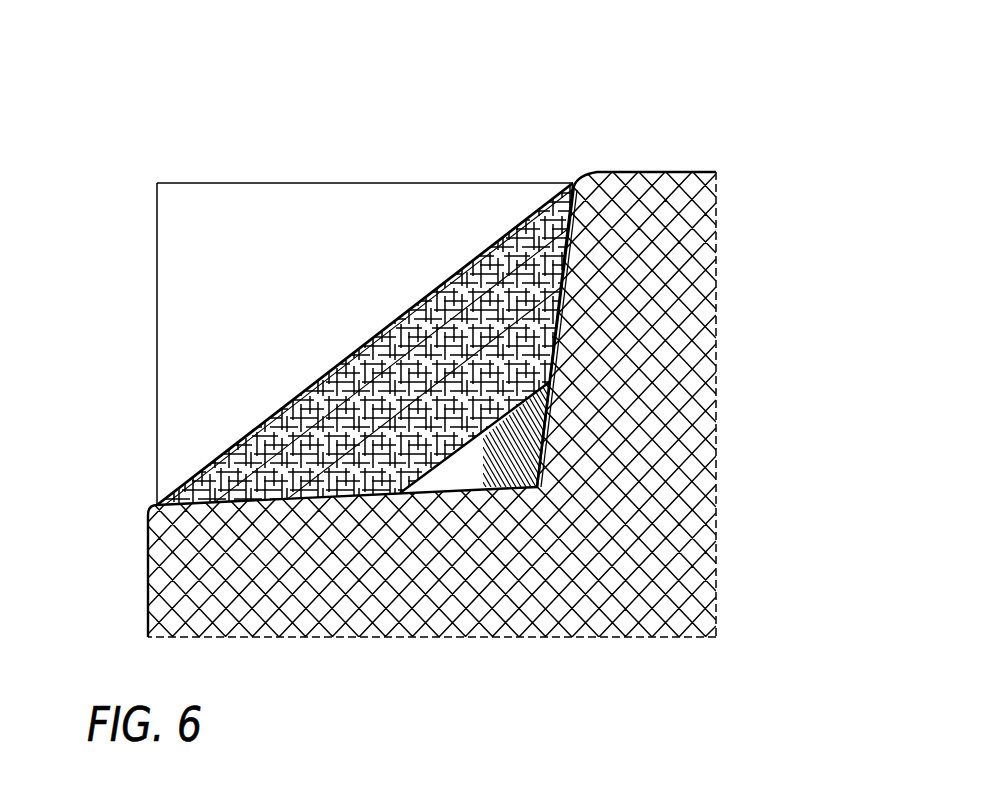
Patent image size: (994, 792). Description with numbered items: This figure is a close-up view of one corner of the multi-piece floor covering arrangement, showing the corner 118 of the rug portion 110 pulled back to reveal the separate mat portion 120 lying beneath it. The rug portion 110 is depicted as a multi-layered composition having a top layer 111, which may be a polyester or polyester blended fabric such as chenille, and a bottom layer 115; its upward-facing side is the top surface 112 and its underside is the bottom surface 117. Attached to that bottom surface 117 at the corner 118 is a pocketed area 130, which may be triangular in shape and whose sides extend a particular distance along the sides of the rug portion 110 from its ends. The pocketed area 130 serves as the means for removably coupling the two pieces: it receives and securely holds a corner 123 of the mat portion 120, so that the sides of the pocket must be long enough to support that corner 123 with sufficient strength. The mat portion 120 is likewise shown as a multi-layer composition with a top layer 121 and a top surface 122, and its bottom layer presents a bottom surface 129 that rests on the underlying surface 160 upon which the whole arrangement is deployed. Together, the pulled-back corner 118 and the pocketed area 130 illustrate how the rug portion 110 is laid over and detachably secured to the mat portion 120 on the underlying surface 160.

The rug portion 110 is at (716, 366).
The top layer 111 is at (705, 492).
The top surface 112 is at (710, 275).
The bottom layer 115 is at (190, 398).
The bottom surface 117 is at (230, 322).
The corner 118 is at (470, 495).
The mat portion 120 is at (422, 185).
The top layer 121 is at (509, 198).
The top surface 122 is at (337, 202).
The corner 123 is at (162, 181).
The bottom surface 129 is at (230, 268).
The pocketed area 130 is at (527, 463).
The underlying surface 160 is at (173, 214).